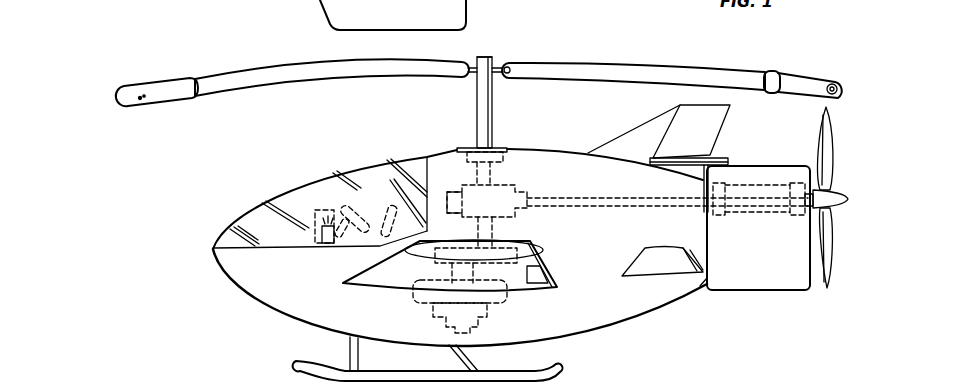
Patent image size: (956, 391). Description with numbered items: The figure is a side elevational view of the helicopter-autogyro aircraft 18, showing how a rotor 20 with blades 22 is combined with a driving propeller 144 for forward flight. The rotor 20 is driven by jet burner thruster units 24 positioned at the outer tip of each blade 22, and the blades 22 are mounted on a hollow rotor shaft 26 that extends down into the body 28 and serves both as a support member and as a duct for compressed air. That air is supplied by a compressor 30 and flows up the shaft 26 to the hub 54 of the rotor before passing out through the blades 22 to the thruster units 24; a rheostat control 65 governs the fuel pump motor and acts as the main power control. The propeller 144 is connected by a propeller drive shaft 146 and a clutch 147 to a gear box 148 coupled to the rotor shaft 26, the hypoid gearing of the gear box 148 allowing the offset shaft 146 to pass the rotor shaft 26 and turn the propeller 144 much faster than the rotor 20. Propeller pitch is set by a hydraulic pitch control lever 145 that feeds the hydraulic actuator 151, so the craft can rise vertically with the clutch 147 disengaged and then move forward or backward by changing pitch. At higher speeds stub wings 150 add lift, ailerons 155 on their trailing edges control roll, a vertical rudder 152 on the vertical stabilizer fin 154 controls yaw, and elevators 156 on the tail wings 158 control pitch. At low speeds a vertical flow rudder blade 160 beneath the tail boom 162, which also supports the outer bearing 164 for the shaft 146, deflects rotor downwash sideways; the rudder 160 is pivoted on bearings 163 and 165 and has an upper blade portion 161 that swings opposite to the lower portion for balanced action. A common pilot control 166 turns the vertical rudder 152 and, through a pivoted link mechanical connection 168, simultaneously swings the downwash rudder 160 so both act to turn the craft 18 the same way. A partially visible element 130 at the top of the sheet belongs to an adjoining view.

The helicopter-autogyro aircraft 18 is at (233, 213).
The rotor 20 is at (623, 55).
The blades 22 is at (698, 68).
The jet burner thruster units 24 is at (810, 61).
The rotor shaft 26 is at (482, 107).
The body 28 is at (520, 147).
The compressor 30 is at (433, 310).
The hub 54 is at (490, 57).
The rheostat control 65 is at (328, 210).
The housing fragment 130 is at (292, 2).
The driving propeller 144 is at (833, 267).
The hydraulic pitch control lever 145 is at (347, 210).
The propeller drive shaft 146 is at (660, 195).
The clutch 147 is at (528, 190).
The gear box 148 is at (507, 220).
The stub wings 150 is at (388, 282).
The pitch control means 151 is at (451, 213).
The vertical rudder 152 is at (730, 107).
The vertical stabilizer fin 154 is at (633, 133).
The ailerons 155 is at (552, 275).
The elevators 156 is at (700, 288).
The tail wings 158 is at (640, 262).
The vertical flow rudder blade 160 is at (743, 283).
The upper blade portion 161 is at (763, 164).
The tail boom 162 is at (752, 217).
The bearing 163 is at (717, 186).
The outer bearing 164 is at (802, 215).
The bearing 165 is at (790, 225).
The common pilot control 166 is at (363, 203).
The pivoted link mechanical connection 168 is at (717, 157).